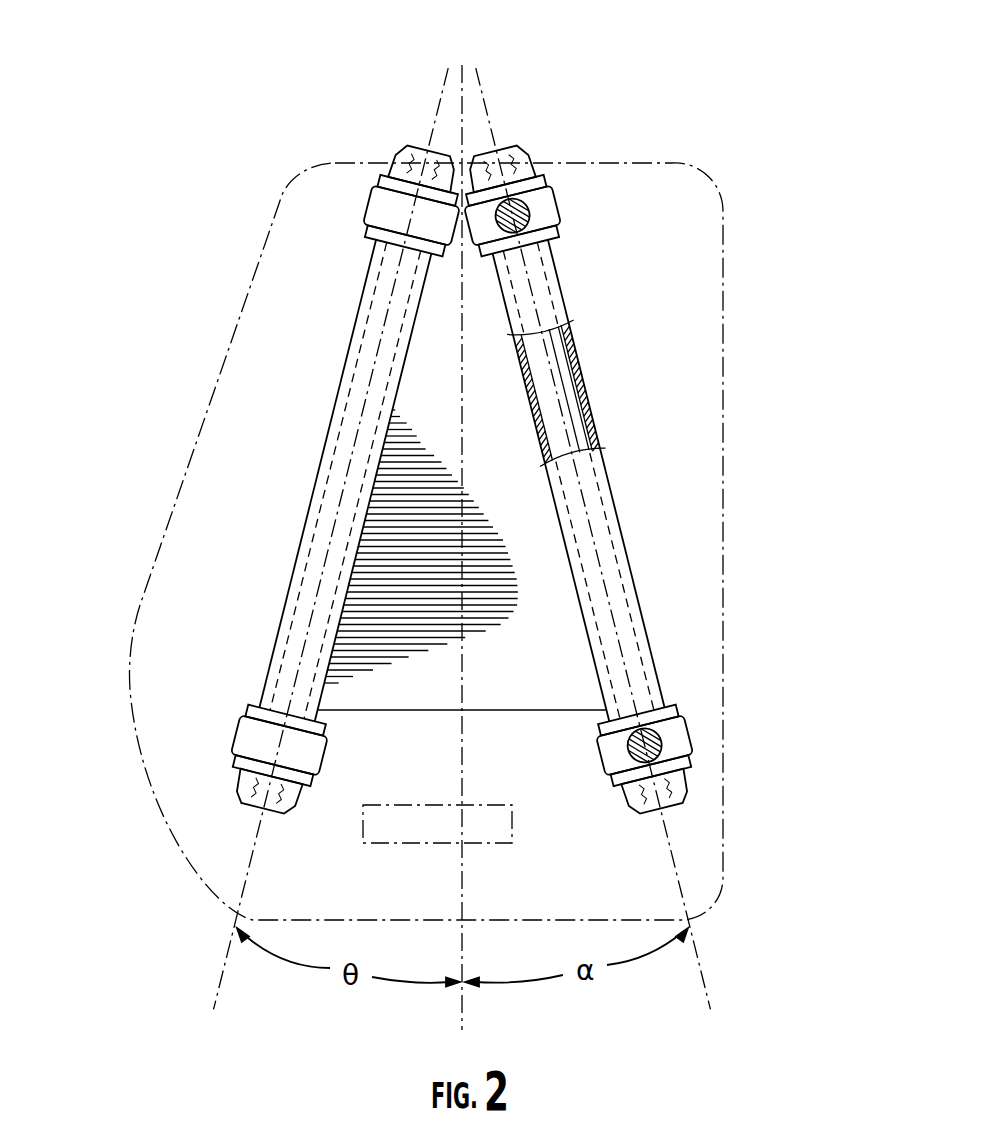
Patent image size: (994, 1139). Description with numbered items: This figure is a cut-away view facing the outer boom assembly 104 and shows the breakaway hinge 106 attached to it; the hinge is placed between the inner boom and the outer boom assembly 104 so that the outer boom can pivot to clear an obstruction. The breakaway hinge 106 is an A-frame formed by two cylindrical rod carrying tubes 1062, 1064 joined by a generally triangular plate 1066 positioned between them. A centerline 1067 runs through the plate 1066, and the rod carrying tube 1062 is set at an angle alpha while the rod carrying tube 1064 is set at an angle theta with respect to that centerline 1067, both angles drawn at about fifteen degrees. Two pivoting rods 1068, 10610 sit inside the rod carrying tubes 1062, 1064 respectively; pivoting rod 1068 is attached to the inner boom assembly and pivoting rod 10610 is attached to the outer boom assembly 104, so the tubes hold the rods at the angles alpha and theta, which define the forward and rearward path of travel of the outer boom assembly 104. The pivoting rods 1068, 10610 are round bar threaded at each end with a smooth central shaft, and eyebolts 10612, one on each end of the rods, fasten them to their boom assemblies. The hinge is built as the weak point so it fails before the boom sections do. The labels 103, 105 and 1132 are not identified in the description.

The second arm 103 is at (626, 538).
The outer boom assembly 104 is at (723, 248).
The first arm 105 is at (331, 538).
The breakaway hinge 106 is at (477, 140).
The rod carrying tube 1062 is at (558, 280).
The rod carrying tube 1064 is at (350, 350).
The triangular plate 1066 is at (527, 467).
The centerline 1067 is at (463, 88).
The pivoting rod 1068 is at (690, 780).
The pivoting rod 10610 is at (237, 782).
The eyebolt 10612 is at (383, 182).
The mounting slot 1132 is at (513, 838).